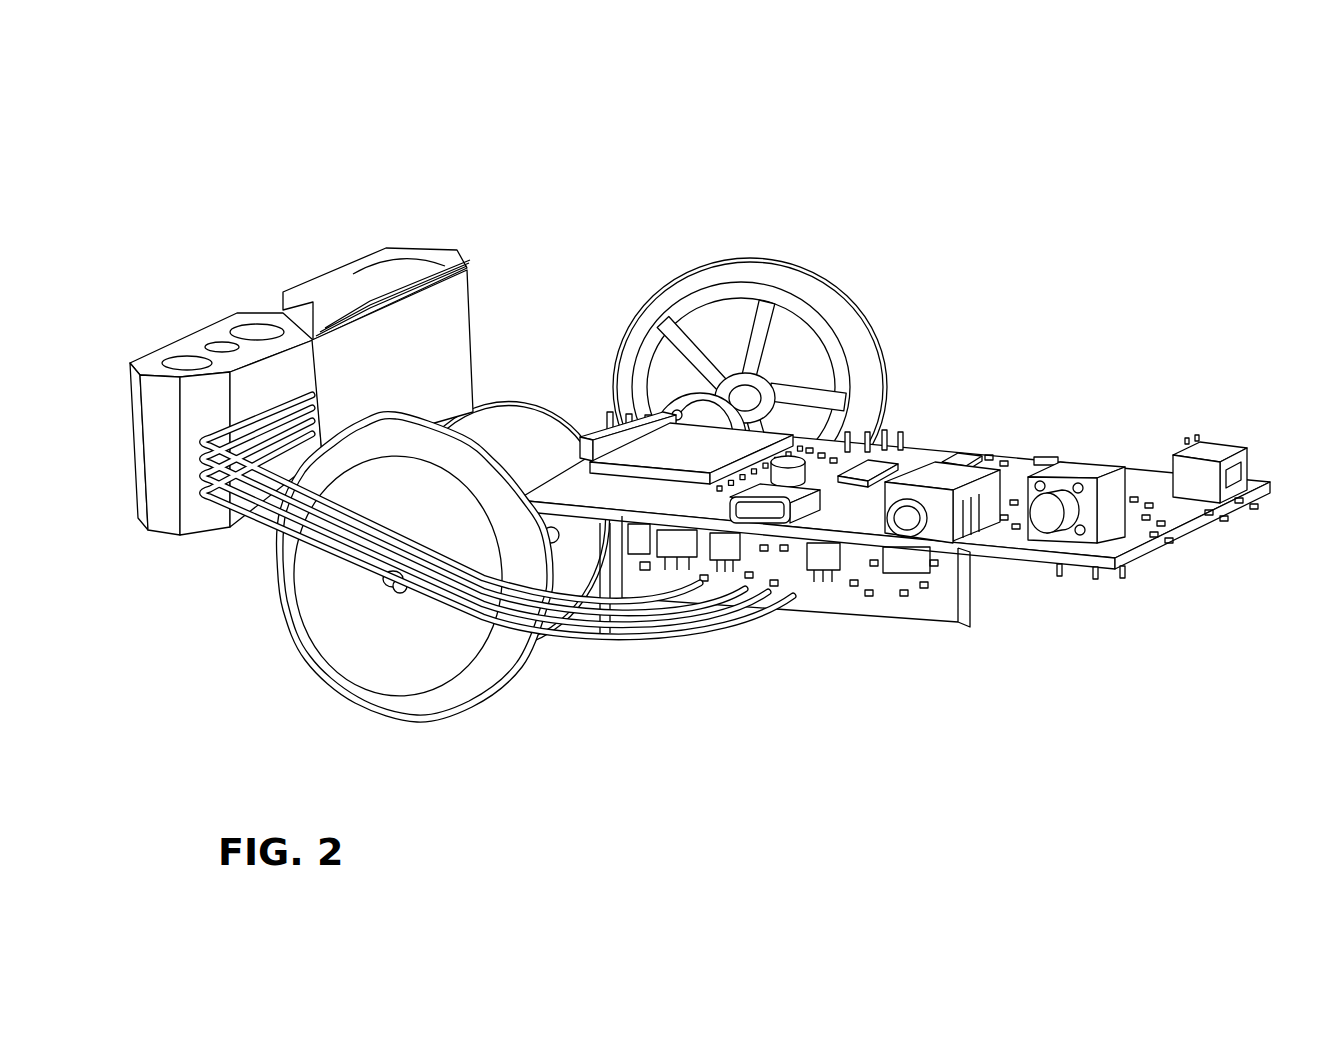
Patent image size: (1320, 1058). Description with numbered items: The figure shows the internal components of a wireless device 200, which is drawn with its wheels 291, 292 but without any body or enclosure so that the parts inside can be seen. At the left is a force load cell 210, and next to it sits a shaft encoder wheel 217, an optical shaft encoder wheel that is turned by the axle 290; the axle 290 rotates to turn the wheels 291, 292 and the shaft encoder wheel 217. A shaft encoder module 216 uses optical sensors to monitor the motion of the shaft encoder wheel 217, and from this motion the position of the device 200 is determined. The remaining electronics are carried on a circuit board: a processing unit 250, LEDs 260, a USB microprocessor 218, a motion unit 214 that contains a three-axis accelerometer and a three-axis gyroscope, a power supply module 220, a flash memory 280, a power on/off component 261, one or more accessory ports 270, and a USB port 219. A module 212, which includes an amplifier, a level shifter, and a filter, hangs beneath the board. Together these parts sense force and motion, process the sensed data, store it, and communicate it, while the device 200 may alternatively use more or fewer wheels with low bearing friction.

The device 200 is at (704, 443).
The force load cell 210 is at (357, 285).
The module 212 is at (700, 547).
The motion unit 214 is at (960, 460).
The shaft encoder module 216 is at (633, 523).
The shaft encoder wheel 217 is at (485, 430).
The USB microprocessor 218 is at (866, 480).
The USB port 219 is at (779, 522).
The power supply module 220 is at (1137, 525).
The processing unit 250 is at (645, 452).
The LEDs 260 is at (808, 445).
The power on/off component 261 is at (1043, 527).
The accessory port 270 is at (913, 542).
The flash memory 280 is at (1044, 463).
The axle 290 is at (385, 588).
The wheel 291 is at (455, 695).
The wheel 292 is at (762, 272).